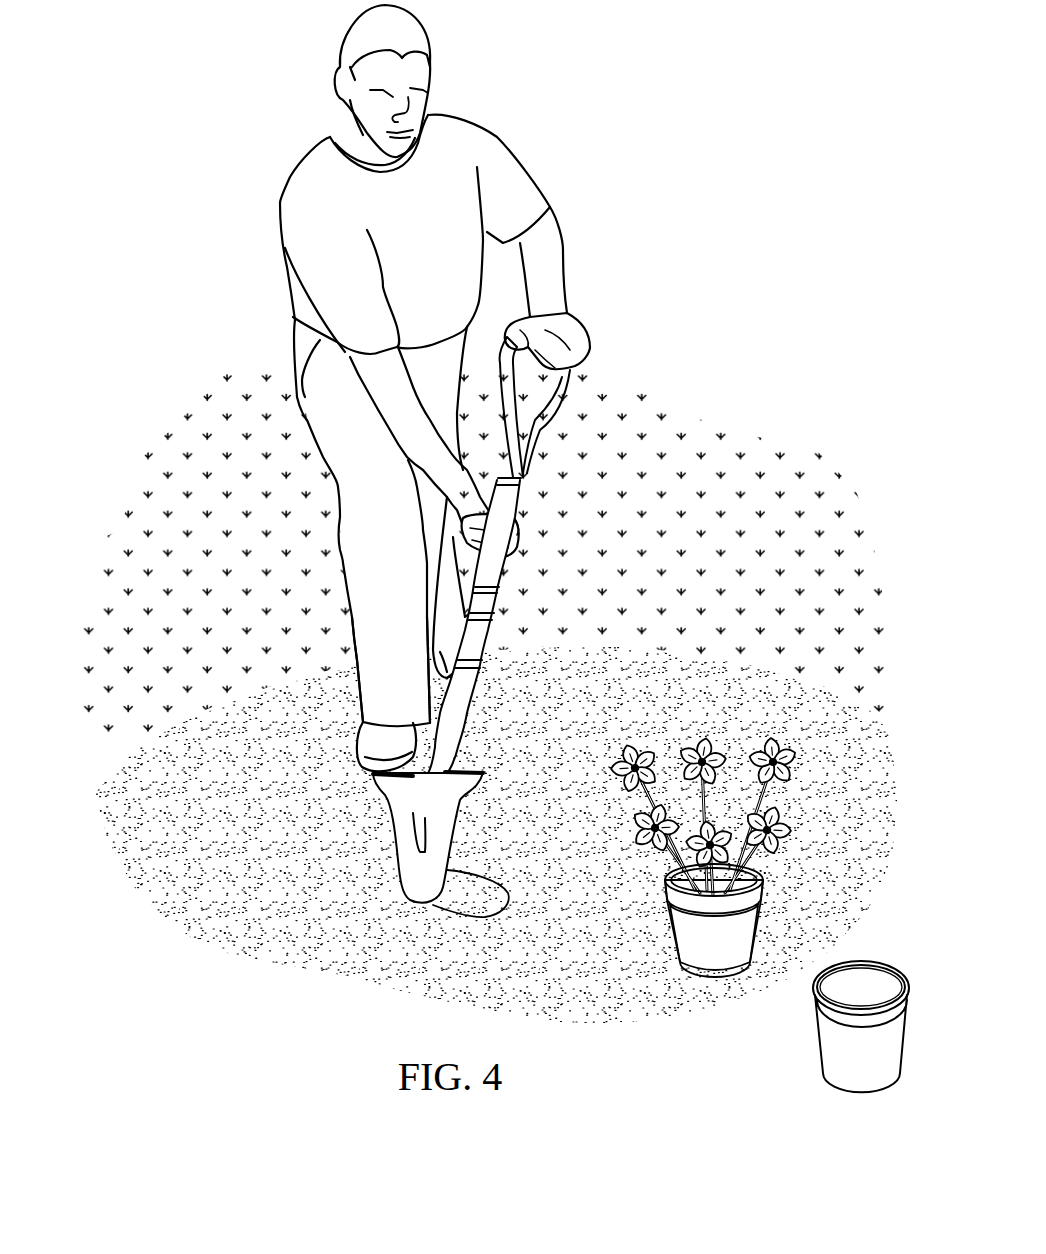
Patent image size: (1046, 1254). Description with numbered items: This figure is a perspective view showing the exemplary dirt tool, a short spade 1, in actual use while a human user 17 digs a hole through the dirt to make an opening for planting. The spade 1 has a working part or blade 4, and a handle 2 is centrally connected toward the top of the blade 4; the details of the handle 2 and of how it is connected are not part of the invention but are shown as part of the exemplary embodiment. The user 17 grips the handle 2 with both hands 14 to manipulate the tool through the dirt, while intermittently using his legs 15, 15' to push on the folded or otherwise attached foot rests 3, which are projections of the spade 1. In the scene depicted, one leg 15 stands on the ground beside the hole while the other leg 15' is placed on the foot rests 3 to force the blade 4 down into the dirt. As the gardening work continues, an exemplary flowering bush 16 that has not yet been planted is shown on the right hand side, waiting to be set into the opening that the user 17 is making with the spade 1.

The spade 1 is at (493, 716).
The handle 2 is at (493, 582).
The foot rests 3 is at (470, 757).
The blade 4 is at (407, 852).
The hands 14 is at (577, 321).
The leg 15 is at (496, 573).
The leg 15' is at (352, 670).
The flowering bush 16 is at (765, 858).
The human user 17 is at (277, 312).